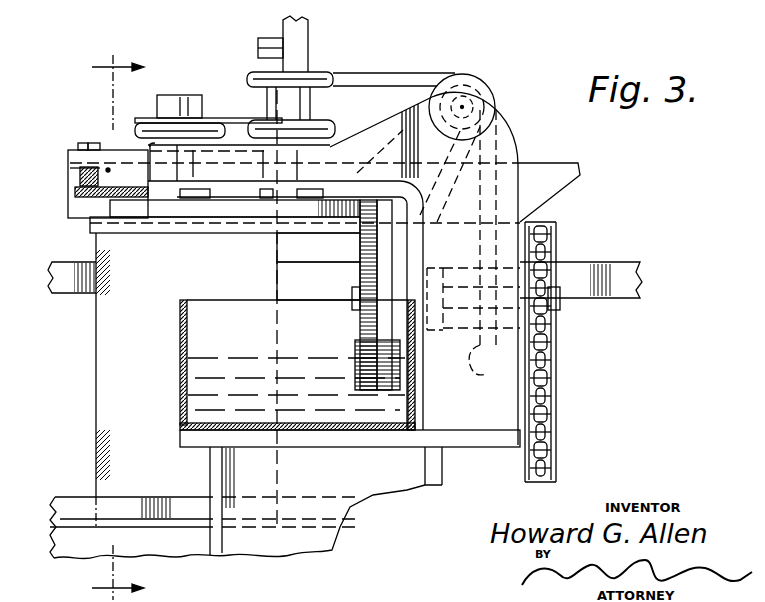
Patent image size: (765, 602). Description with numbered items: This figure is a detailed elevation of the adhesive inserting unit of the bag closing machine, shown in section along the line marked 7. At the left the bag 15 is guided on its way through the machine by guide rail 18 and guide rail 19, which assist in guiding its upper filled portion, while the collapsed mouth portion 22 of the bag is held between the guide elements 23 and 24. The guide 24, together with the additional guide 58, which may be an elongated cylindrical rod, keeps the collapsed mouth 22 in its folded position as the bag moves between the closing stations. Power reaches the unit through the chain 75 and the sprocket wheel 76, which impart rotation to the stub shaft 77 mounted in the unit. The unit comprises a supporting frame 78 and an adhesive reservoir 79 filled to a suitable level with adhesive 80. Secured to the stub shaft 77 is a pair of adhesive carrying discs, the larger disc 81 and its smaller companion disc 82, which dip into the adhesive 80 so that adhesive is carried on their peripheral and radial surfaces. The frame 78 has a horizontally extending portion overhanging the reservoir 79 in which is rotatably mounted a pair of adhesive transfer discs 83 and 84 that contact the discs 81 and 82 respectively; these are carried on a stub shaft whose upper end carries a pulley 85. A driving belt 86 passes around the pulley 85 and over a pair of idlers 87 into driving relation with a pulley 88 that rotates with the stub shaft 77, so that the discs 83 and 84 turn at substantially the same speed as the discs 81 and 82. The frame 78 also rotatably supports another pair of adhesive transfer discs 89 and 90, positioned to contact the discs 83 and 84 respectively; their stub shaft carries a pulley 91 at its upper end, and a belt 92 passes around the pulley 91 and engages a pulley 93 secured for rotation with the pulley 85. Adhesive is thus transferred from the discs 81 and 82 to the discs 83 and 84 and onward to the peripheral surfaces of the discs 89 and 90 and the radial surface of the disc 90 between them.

The section line 7- 7 is at (107, 327).
The bag 15 is at (98, 355).
The guide rail 18 is at (62, 272).
The guide rail 19 is at (620, 262).
The collapsed mouth portion 22 is at (108, 168).
The guide element 23 is at (70, 168).
The guide element 24 is at (80, 176).
The additional guide 58 is at (75, 190).
The chain 75 is at (557, 387).
The sprocket wheel 76 is at (540, 226).
The stub shaft 77 is at (557, 308).
The supporting frame 78 is at (505, 137).
The adhesive reservoir 79 is at (180, 343).
The adhesive 80 is at (232, 368).
The adhesive carrying disc 81 is at (385, 246).
The adhesive carrying disc 82 is at (366, 245).
The adhesive transfer disc 83 is at (240, 218).
The adhesive transfer disc 84 is at (253, 236).
The pulley 85 is at (331, 61).
The driving belt 86 is at (401, 64).
The idler 87 is at (470, 76).
The pulley 88 is at (473, 244).
The adhesive transfer disc 89 is at (165, 212).
The adhesive transfer disc 90 is at (130, 234).
The pulley 91 is at (150, 119).
The belt 92 is at (232, 124).
The pulley 93 is at (322, 124).